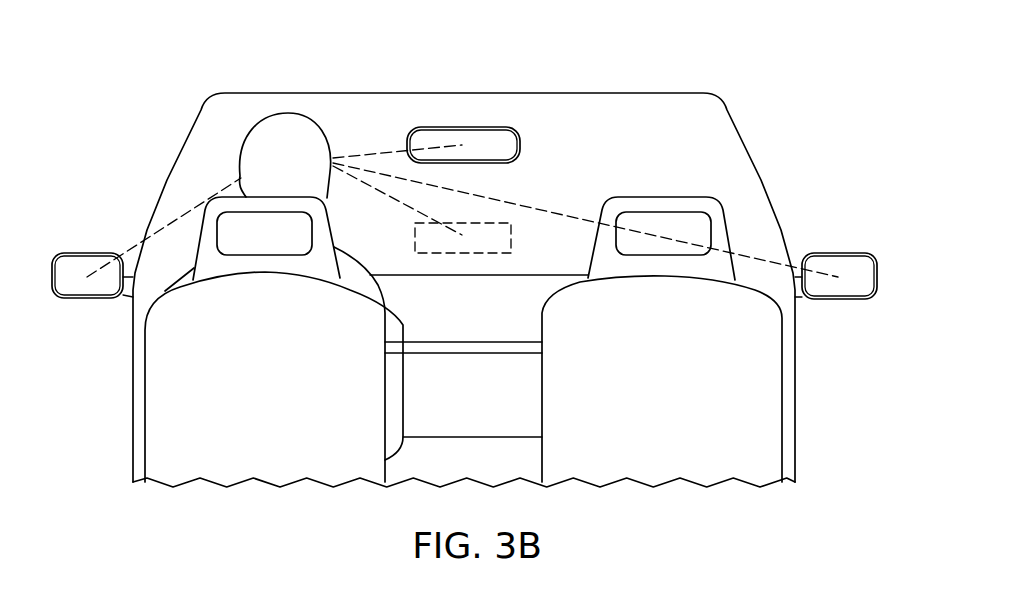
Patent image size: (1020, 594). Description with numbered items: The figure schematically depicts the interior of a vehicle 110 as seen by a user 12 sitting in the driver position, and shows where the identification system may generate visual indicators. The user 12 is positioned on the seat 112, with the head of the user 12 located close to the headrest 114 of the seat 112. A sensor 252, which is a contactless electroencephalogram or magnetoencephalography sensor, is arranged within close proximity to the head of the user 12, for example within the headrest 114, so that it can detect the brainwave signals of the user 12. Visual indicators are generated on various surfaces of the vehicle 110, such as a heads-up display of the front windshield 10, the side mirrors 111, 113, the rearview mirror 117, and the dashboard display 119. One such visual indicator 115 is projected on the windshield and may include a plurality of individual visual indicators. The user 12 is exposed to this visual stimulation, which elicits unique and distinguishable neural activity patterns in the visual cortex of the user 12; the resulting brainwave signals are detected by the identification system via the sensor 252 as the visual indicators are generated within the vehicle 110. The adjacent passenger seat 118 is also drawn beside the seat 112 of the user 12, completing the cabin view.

The front windshield 10 is at (218, 118).
The vehicle 110 is at (780, 115).
The seat 112 is at (187, 467).
The user 12 is at (288, 112).
The sensor 252 is at (290, 207).
The side mirror 111 is at (85, 264).
The side mirror 113 is at (840, 264).
The rearview mirror 117 is at (518, 146).
The visual indicator 115 is at (462, 255).
The headrest 114 is at (263, 264).
The driver seat 118 is at (155, 403).
The dashboard display 119 is at (527, 306).